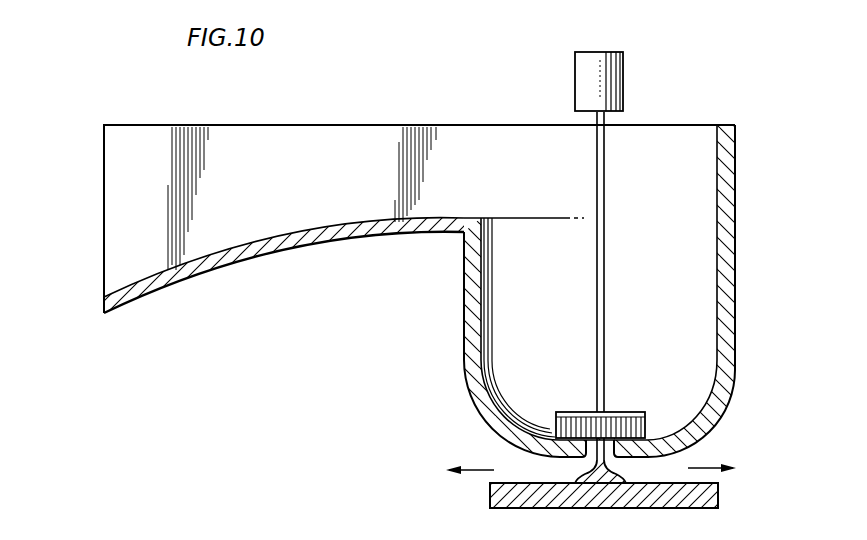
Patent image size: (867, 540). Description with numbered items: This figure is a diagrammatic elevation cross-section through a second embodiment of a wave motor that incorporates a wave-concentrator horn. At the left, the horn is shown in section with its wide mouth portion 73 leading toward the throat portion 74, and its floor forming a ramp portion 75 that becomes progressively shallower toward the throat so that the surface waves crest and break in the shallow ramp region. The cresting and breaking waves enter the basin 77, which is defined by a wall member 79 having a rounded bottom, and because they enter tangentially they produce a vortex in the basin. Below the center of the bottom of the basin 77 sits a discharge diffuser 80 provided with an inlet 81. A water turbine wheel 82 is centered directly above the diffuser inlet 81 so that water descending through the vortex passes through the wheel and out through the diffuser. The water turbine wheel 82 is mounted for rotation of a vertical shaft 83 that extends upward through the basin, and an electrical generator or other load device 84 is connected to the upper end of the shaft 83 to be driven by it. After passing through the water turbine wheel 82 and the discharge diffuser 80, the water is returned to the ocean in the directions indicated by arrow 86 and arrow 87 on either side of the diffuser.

The mouth portion 73 is at (104, 247).
The throat portion 74 is at (471, 217).
The ramp portion 75 is at (250, 251).
The basin 77 is at (483, 327).
The wall member 79 is at (734, 377).
The discharge diffuser 80 is at (512, 462).
The inlet 81 is at (617, 457).
The water turbine wheel 82 is at (570, 412).
The shaft 83 is at (597, 333).
The electrical generator or other load device 84 is at (605, 78).
The arrow 86 is at (474, 472).
The arrow 87 is at (700, 466).